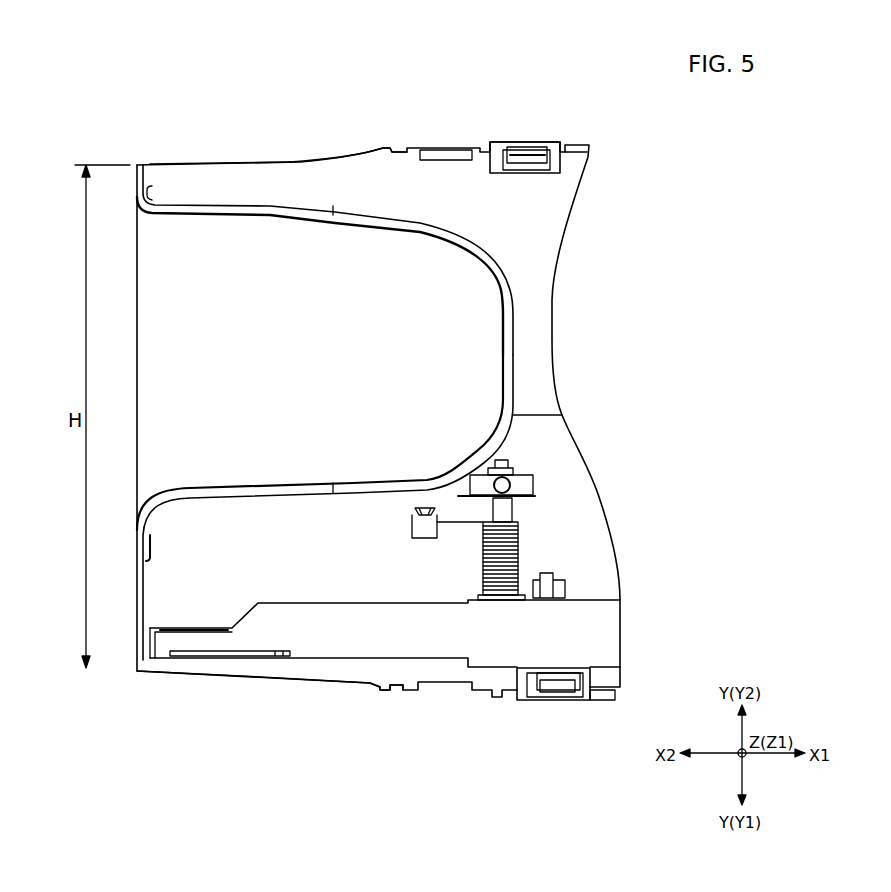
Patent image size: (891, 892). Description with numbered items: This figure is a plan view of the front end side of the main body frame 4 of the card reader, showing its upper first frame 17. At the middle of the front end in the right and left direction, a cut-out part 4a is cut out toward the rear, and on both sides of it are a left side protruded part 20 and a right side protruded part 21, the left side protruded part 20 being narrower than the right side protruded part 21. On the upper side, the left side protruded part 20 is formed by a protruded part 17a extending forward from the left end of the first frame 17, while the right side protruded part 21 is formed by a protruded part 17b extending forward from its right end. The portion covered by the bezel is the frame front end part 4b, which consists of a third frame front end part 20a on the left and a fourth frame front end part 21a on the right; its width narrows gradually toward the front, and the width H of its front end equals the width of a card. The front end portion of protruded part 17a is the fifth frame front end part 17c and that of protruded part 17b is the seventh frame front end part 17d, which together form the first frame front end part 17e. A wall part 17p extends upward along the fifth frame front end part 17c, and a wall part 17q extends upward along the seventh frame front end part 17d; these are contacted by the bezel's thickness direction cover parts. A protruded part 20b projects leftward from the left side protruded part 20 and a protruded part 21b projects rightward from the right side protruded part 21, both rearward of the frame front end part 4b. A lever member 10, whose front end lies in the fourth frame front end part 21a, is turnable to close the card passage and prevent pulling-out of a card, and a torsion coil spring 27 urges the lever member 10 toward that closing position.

The main body frame 4 is at (381, 395).
The first frame 17 is at (578, 148).
The cut-out part 4a is at (201, 350).
The frame front end part 4b is at (199, 160).
The third frame front end part 20a is at (220, 140).
The left side protruded part 20 is at (324, 138).
The protruded part 17a is at (310, 160).
The protruded part 20b is at (386, 147).
The wall part 17p is at (250, 207).
The fifth frame front end part 17c is at (320, 276).
The first frame front end part 17e is at (291, 225).
The seventh frame front end part 17d is at (291, 484).
The wall part 17q is at (316, 497).
The torsion coil spring 27 is at (520, 557).
The lever member 10 is at (340, 655).
The fourth frame front end part 21a is at (200, 677).
The right side protruded part 21 is at (309, 718).
The protruded part 17b is at (302, 681).
The protruded part 21b is at (385, 692).